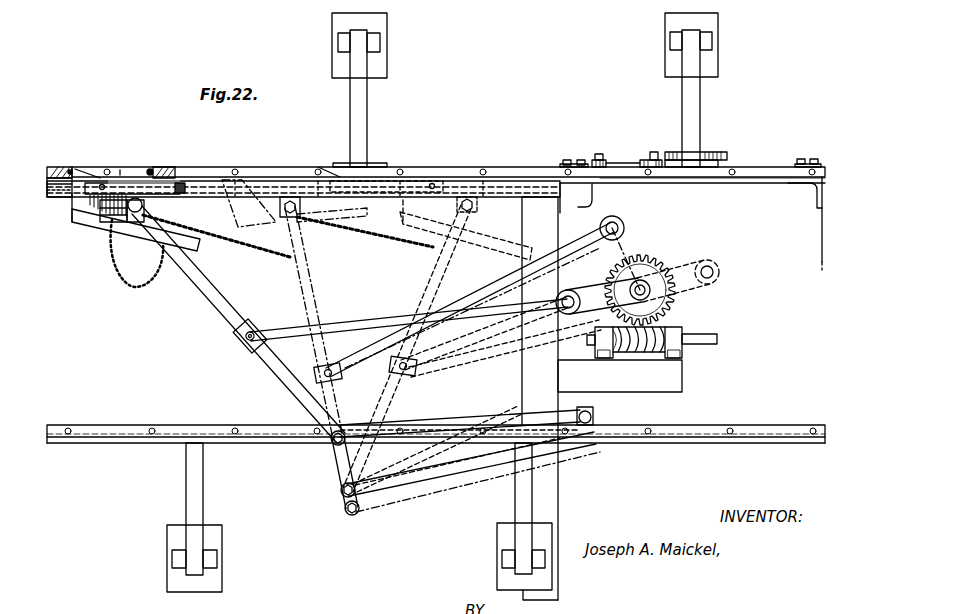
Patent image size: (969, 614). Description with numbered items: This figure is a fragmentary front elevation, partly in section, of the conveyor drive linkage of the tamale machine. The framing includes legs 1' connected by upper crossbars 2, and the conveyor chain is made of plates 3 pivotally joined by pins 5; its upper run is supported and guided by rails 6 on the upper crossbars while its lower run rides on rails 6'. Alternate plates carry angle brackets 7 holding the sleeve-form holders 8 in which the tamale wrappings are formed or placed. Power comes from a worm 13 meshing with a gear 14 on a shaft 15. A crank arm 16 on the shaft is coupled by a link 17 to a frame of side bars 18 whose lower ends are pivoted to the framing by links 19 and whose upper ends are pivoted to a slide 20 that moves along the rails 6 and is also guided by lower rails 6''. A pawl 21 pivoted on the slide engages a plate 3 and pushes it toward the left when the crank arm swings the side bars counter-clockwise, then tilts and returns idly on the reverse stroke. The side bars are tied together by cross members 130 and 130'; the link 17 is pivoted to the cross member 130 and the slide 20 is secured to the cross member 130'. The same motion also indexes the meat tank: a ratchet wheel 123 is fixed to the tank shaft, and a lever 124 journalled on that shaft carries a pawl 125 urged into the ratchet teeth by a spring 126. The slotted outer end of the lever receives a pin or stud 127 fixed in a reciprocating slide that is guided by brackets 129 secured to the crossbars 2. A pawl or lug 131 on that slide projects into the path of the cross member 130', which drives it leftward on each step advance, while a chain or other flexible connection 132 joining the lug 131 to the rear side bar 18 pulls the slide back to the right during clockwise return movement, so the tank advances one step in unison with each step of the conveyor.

The legs 1' is at (659, 388).
The upper crossbars 2 is at (590, 190).
The plates 3 is at (58, 167).
The pins 5 is at (68, 167).
The rails 6 is at (448, 180).
The rails 6' is at (436, 447).
The lower rails 6'' is at (303, 202).
The angle brackets 7 is at (360, 104).
The holders 8 is at (385, 23).
The worm 13 is at (640, 352).
The gear 14 is at (657, 265).
The shaft 15 is at (648, 292).
The crank arm 16 is at (587, 292).
The link 17 is at (374, 320).
The side bars 18 is at (214, 308).
The links 19 is at (452, 418).
The slide 20 is at (138, 185).
The pawl 21 is at (76, 212).
The ratchet wheel 123 is at (722, 152).
The lever 124 is at (637, 170).
The pawl 125 is at (654, 152).
The spring 126 is at (640, 160).
The pin or stud 127 is at (599, 154).
The brackets 129 is at (563, 163).
The cross member 130 is at (263, 326).
The cross member 130' is at (140, 229).
The pawl or lug 131 is at (112, 210).
The chain or other flexible connection 132 is at (133, 287).